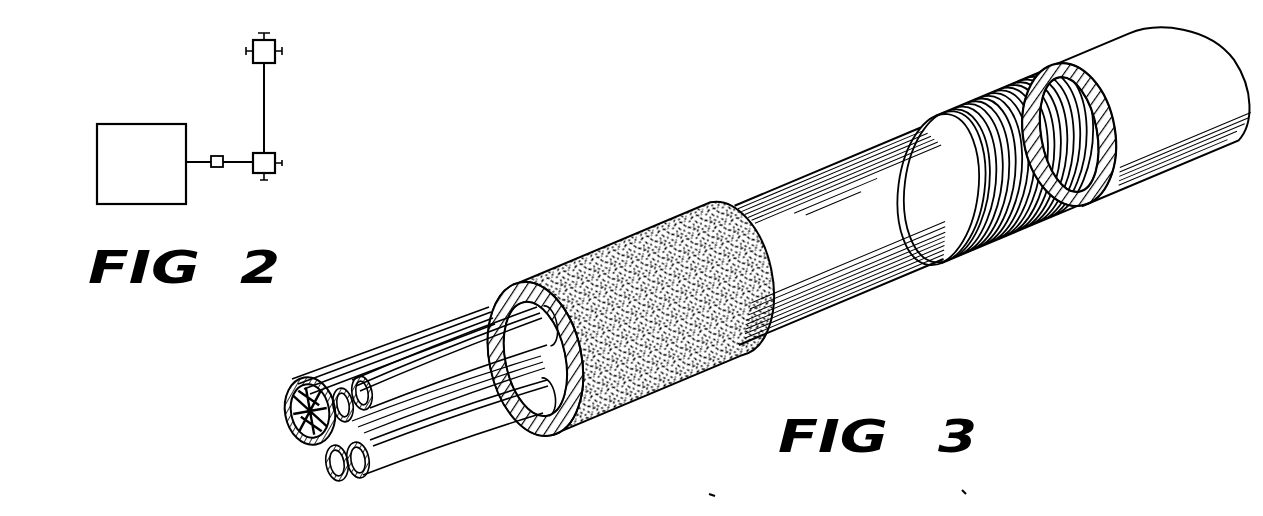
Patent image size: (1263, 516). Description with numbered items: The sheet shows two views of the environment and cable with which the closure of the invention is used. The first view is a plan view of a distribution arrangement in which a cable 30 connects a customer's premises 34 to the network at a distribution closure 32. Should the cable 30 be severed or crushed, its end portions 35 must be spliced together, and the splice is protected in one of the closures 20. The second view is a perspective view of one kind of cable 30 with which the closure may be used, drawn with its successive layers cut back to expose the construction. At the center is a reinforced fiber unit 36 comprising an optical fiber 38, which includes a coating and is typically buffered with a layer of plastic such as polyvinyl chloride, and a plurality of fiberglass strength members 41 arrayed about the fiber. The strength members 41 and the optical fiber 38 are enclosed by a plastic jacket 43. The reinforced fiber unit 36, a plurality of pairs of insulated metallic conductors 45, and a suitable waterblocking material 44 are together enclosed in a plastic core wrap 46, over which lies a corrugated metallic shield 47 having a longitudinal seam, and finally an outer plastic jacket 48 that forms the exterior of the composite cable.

In FIG. 2, the closure 20 is at (217, 155).
In FIG. 2, the cable 30 is at (233, 157).
In FIG. 3, the cable 30 is at (658, 153).
In FIG. 2, the distribution closure 32 is at (267, 151).
In FIG. 2, the customer's premises 34 is at (127, 124).
In FIG. 2, the end portions 35 is at (202, 165).
In FIG. 3, the reinforced fiber unit 36 is at (282, 382).
In FIG. 3, the optical fiber 38 is at (298, 400).
In FIG. 3, the fiberglass strength members 41 is at (291, 398).
In FIG. 3, the plastic jacket 43 is at (322, 368).
In FIG. 3, the waterblocking material 44 is at (625, 321).
In FIG. 3, the insulated metallic conductors 45 is at (452, 380).
In FIG. 3, the plastic core wrap 46 is at (836, 234).
In FIG. 3, the corrugated metallic shield 47 is at (985, 170).
In FIG. 3, the plastic jacket 48 is at (1122, 116).